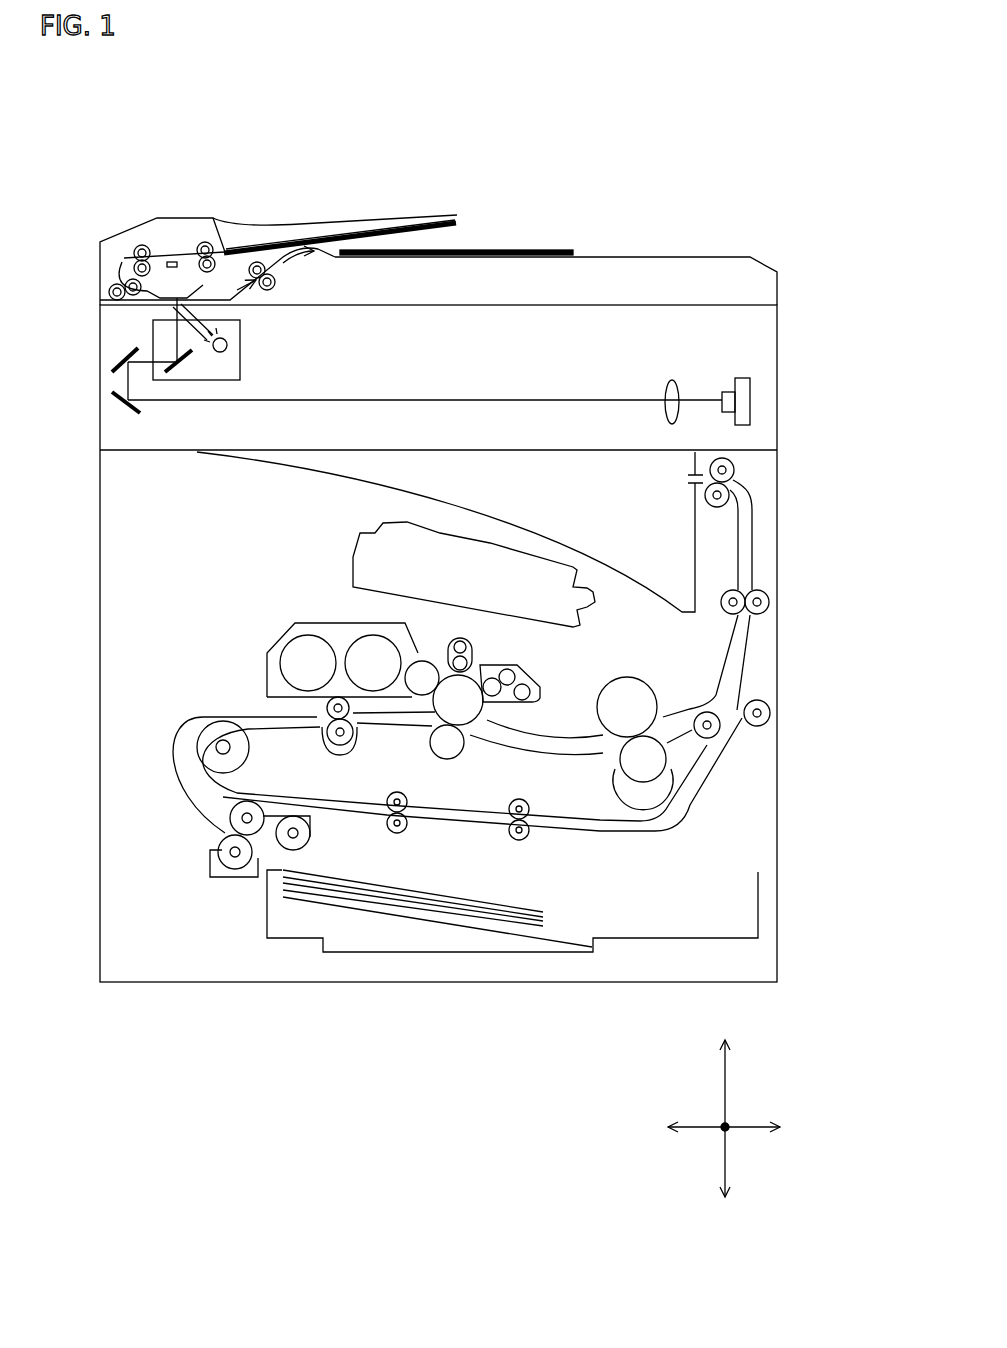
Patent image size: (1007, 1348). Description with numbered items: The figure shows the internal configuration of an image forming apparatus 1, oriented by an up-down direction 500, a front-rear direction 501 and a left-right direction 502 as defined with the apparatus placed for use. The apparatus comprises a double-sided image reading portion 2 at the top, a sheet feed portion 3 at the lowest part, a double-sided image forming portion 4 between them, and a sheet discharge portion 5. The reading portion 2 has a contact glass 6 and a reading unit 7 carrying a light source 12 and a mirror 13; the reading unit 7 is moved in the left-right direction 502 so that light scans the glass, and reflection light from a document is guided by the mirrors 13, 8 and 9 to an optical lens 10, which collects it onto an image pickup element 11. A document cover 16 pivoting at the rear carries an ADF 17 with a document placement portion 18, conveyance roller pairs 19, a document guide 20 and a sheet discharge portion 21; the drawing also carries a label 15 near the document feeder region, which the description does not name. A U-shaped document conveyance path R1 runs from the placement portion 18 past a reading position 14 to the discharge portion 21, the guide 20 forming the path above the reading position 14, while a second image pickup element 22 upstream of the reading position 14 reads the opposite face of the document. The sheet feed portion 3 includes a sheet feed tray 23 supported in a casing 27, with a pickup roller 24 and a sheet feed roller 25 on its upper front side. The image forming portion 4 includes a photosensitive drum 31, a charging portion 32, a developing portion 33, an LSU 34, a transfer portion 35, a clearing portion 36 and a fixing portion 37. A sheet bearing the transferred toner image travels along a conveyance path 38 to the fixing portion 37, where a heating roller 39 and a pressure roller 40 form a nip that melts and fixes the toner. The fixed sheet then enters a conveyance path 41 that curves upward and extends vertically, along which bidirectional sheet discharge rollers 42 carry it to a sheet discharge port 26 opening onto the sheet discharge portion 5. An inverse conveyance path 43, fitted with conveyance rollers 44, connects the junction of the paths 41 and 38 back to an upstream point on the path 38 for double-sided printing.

The image forming apparatus 1 is at (752, 166).
The double-sided image reading portion 2 is at (778, 353).
The sheet feed portion 3 is at (368, 910).
The double-sided image forming portion 4 is at (388, 661).
The sheet discharge portion 5 is at (487, 503).
The contact glass 6 is at (688, 305).
The reading unit 7 is at (242, 323).
The mirror 8 is at (112, 370).
The mirror 9 is at (112, 402).
The optical lens 10 is at (666, 390).
The image pickup element 11 is at (740, 378).
The light source 12 is at (228, 348).
The mirror 13 is at (181, 363).
The reading position 14 is at (165, 307).
The automatic document feeder 15 is at (592, 226).
The document cover 16 is at (810, 283).
The ADF 17 is at (213, 217).
The document placement portion 18 is at (447, 230).
The conveyance roller pairs 19 is at (201, 243).
The document guide 20 is at (375, 216).
The sheet discharge portion 21 is at (440, 257).
The image pickup element 22 is at (169, 261).
The sheet feed tray 23 is at (370, 953).
The pickup roller 24 is at (313, 838).
The sheet feed roller 25 is at (215, 829).
The sheet discharge port 26 is at (690, 483).
The casing 27 is at (778, 757).
The photosensitive drum 31 is at (480, 724).
The charging portion 32 is at (473, 641).
The developing portion 33 is at (340, 622).
The LSU 34 is at (352, 557).
The transfer portion 35 is at (448, 760).
The clearing portion 36 is at (532, 669).
The fixing portion 37 is at (606, 786).
The conveyance path 38 is at (542, 746).
The heating roller 39 is at (657, 723).
The pressure roller 40 is at (650, 791).
The conveyance path 41 is at (740, 673).
The sheet discharge rollers 42 is at (735, 471).
The inverse conveyance path 43 is at (455, 821).
The conveyance rollers 44 is at (410, 835).
The up-down direction 500 is at (725, 1078).
The front-rear direction 501 is at (727, 1125).
The left-right direction 502 is at (703, 1125).
The document conveyance path R1 is at (125, 269).